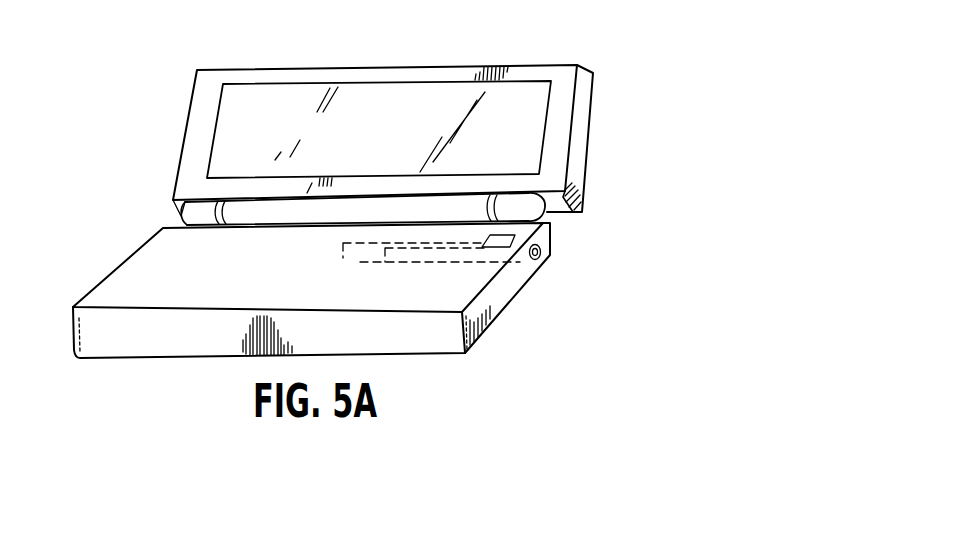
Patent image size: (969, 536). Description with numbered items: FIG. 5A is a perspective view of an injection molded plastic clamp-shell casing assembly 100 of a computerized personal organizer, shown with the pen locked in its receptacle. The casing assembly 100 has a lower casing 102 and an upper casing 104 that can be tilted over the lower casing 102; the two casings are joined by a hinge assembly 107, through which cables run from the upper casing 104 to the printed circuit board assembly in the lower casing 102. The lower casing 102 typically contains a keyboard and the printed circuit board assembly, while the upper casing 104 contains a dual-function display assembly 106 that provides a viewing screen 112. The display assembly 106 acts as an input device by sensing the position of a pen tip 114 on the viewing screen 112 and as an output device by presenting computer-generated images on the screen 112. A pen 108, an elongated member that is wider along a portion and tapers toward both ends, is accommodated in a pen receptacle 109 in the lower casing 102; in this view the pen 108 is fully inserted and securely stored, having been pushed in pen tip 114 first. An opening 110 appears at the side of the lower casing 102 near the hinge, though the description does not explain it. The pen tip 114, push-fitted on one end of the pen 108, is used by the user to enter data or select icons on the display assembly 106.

The casing assembly 100 is at (137, 193).
The lower casing 102 is at (122, 281).
The upper casing 104 is at (195, 126).
The dual-function display assembly 106 is at (447, 88).
The hinge assembly 107 is at (525, 203).
The pen 108 is at (548, 255).
The pen receptacle 109 is at (343, 258).
The side wall of base 110 is at (552, 237).
The viewing screen 112 is at (533, 118).
The pen tip 114 is at (343, 248).